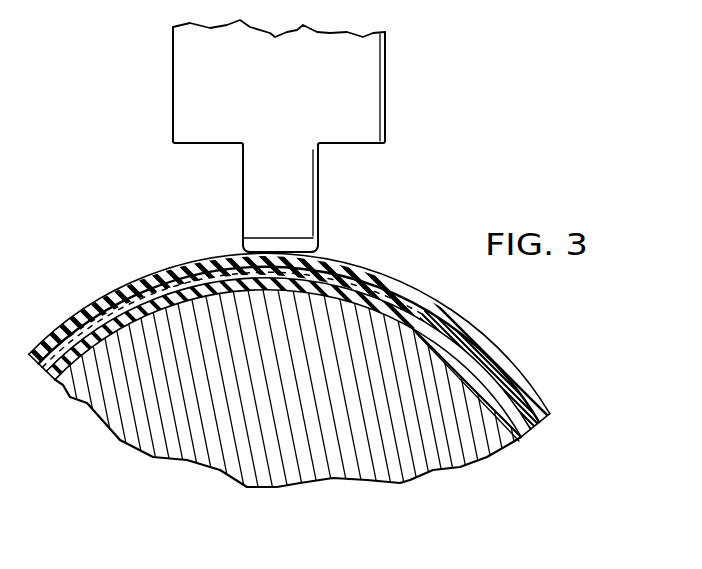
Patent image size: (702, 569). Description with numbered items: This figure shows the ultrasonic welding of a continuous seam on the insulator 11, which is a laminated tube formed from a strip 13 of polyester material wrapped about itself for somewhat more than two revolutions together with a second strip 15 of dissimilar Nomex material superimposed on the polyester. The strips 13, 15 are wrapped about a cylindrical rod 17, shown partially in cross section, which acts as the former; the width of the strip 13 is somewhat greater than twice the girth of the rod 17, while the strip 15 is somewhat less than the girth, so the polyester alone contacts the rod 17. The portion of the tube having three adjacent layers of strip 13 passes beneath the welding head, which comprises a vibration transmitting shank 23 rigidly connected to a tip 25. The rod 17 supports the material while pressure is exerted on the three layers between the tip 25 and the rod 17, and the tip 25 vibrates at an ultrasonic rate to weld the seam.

The insulator 11 is at (85, 298).
The strip 13 is at (390, 293).
The second strip 15 is at (500, 357).
The cylindrical rod 17 is at (432, 452).
The shank 23 is at (367, 82).
The tip 25 is at (307, 193).